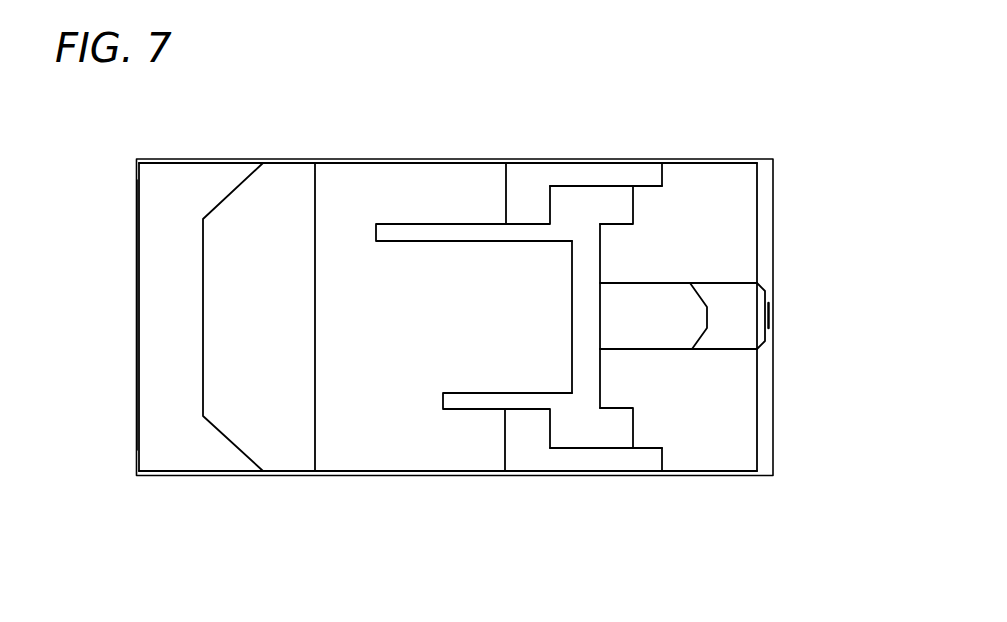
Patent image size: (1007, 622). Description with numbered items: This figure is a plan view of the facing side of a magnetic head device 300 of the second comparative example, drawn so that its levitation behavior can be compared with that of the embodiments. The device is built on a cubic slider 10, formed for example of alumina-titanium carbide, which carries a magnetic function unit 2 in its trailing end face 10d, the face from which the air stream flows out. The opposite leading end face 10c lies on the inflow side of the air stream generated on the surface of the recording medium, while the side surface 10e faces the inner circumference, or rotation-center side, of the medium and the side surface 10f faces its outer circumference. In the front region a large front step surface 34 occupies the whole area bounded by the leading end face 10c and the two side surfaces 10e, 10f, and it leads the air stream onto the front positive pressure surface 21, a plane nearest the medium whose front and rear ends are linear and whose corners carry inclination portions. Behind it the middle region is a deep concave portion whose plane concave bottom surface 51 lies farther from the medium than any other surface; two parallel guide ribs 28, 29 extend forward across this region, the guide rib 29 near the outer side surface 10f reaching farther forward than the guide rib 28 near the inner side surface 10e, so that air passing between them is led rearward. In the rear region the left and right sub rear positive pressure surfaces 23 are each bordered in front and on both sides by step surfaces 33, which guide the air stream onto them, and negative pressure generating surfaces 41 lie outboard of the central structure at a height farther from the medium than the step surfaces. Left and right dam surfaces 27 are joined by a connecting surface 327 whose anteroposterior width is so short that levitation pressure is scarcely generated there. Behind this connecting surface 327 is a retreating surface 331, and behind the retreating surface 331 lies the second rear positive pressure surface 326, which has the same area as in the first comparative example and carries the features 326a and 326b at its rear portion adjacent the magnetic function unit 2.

The magnetic head device 300 is at (416, 378).
The slider 10 is at (337, 483).
The leading end face 10c is at (138, 363).
The trailing end face 10d is at (774, 375).
The side surface of inner circumference side 10e is at (470, 477).
The side surface of outer circumference side 10f is at (445, 159).
The front step surface 34 is at (150, 253).
The front positive pressure surface 21 is at (237, 225).
The concave bottom surface 51 is at (356, 200).
The guide rib 29 is at (390, 232).
The guide rib 28 is at (455, 405).
The dam surface 27 is at (582, 261).
The connecting surface 327 is at (582, 313).
The step surface 33 is at (525, 192).
The sub rear positive pressure surface 23 is at (610, 207).
The negative pressure generating surface 41 is at (622, 258).
The second rear positive pressure surface 326 is at (735, 300).
The notch of projection 326a is at (703, 310).
The tip of projection 326b is at (766, 293).
The retreating surface 331 is at (672, 333).
The magnetic function unit 2 is at (768, 308).